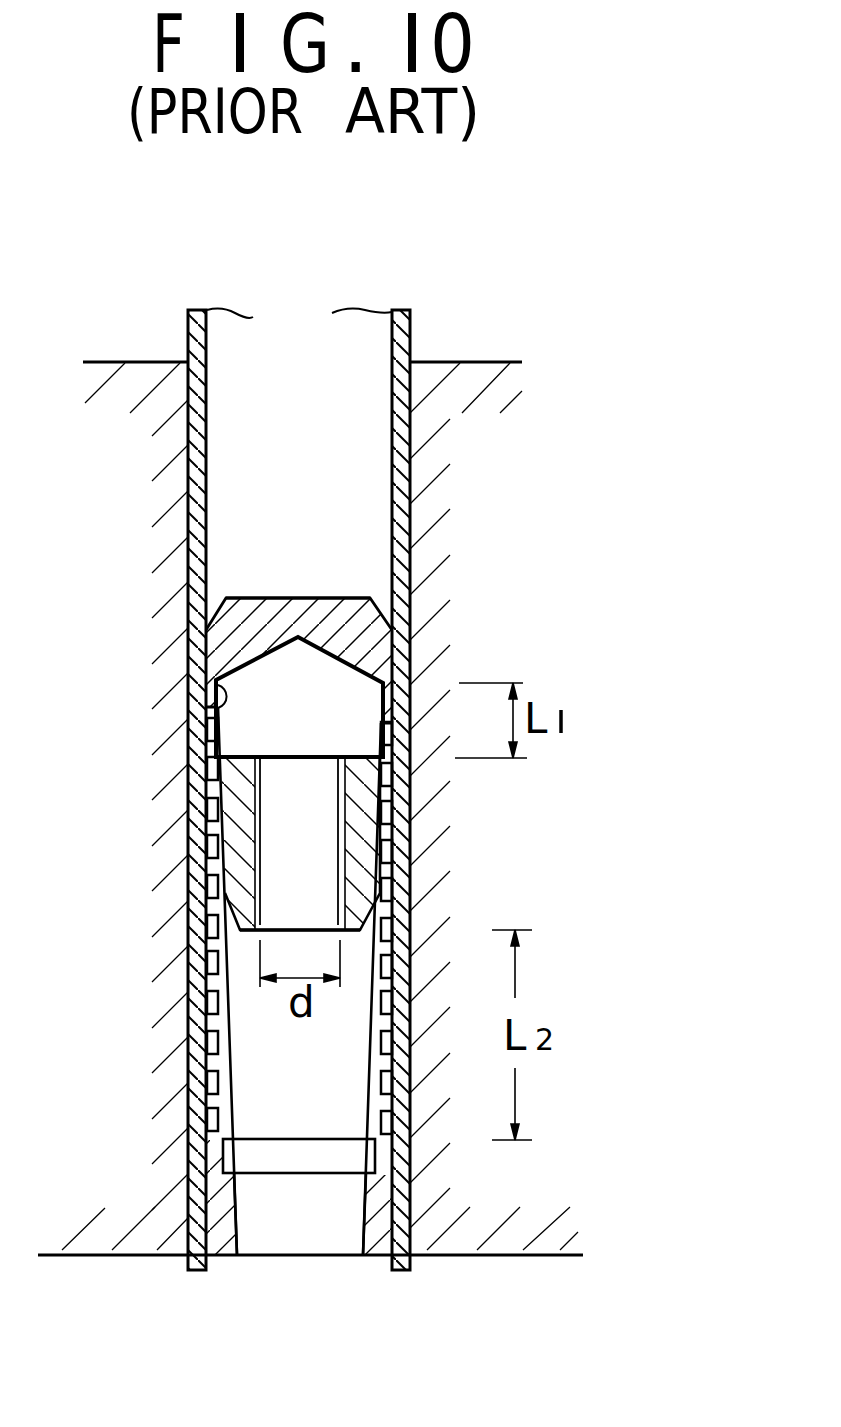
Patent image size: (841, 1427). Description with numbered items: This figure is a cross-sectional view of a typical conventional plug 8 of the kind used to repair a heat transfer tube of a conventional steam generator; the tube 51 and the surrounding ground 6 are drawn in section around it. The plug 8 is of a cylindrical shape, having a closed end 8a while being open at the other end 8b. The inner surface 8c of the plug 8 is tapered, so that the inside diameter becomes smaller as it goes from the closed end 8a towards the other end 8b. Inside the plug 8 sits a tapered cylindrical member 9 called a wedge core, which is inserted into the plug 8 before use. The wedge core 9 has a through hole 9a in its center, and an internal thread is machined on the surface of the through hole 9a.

The pipe 51 is at (410, 338).
The ground 6 is at (483, 362).
The plug 8 is at (372, 618).
The closed end 8a is at (298, 620).
The other end 8b is at (305, 1220).
The inner surface 8c is at (207, 712).
The tapered cylindrical member 9 is at (362, 840).
The through hole 9a is at (278, 815).